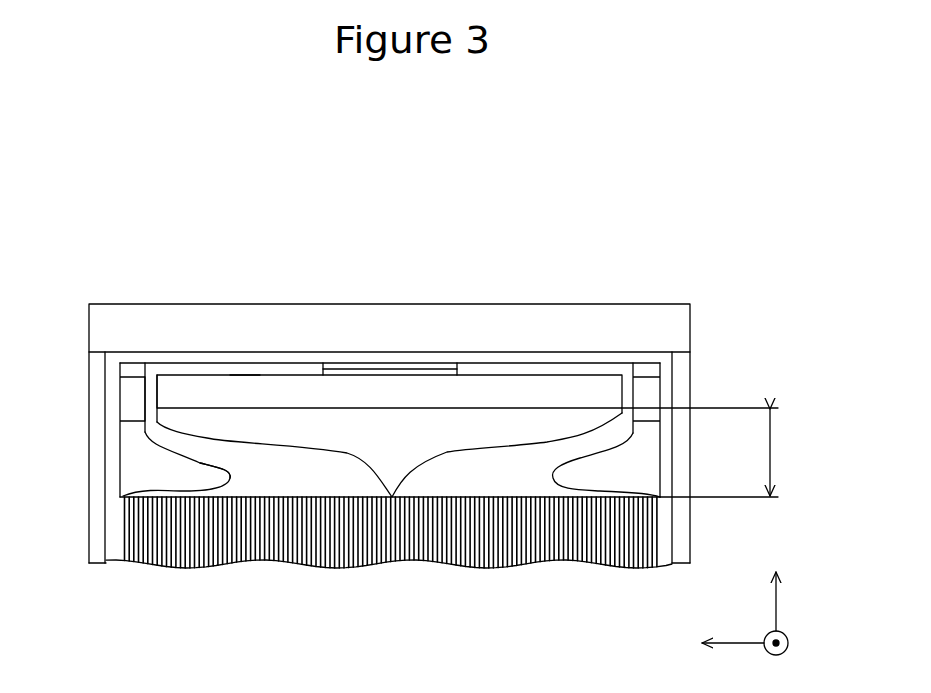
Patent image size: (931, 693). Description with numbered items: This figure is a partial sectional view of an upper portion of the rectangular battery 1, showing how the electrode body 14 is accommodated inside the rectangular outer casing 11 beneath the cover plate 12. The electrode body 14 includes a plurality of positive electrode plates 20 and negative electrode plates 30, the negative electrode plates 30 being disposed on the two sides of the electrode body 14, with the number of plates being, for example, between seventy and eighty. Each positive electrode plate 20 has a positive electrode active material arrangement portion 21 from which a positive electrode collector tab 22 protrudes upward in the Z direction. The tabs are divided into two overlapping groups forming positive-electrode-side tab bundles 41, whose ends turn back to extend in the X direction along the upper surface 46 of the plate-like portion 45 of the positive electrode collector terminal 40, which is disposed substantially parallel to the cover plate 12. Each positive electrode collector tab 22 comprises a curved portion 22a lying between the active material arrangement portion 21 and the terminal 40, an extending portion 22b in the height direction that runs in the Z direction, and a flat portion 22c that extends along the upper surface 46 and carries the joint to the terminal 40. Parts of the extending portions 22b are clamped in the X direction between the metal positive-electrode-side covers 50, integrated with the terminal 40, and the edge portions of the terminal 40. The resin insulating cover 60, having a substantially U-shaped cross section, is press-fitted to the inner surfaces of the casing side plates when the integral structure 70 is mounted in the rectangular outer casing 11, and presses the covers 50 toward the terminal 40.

The rectangular battery 1 is at (423, 265).
The rectangular outer casing 11 is at (95, 420).
The cover plate 12 is at (598, 310).
The electrode body 14 is at (300, 550).
The positive electrode plate 20 is at (178, 443).
The positive electrode active material arrangement portion 21 is at (195, 555).
The positive electrode collector tab 22 is at (218, 445).
The curved portion 22a is at (240, 468).
The extending portion in the height direction 22b is at (150, 392).
The flat portion 22c is at (243, 368).
The negative electrode plate 30 is at (120, 527).
The positive electrode collector terminal 40 is at (267, 380).
The positive-electrode-side tab bundle 41 is at (333, 467).
The plate-like portion 45 is at (305, 387).
The upper surface 46 is at (222, 378).
The positive-electrode-side cover 50 is at (650, 387).
The insulating cover 60 is at (648, 357).
The integral structure 70 is at (175, 390).